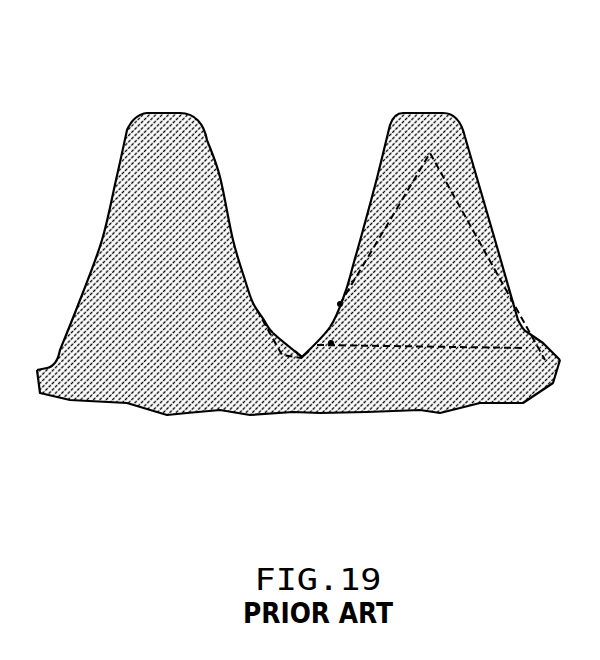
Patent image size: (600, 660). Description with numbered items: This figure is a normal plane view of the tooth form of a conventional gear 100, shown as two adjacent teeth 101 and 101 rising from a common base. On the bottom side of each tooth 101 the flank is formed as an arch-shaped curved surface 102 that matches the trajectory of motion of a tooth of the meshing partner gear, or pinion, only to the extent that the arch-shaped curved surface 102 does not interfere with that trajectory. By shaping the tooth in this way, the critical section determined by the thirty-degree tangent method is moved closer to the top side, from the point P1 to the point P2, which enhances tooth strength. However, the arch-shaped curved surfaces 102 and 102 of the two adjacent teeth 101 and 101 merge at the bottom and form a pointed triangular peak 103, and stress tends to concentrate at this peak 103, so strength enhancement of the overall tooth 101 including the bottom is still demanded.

The gear 100 is at (298, 269).
The tooth 101 is at (123, 138).
The arch-shaped curved surface 102 is at (317, 335).
The pointed triangular peak 103 is at (302, 358).
The critical section position P1 is at (331, 343).
The critical section position P2 is at (340, 304).